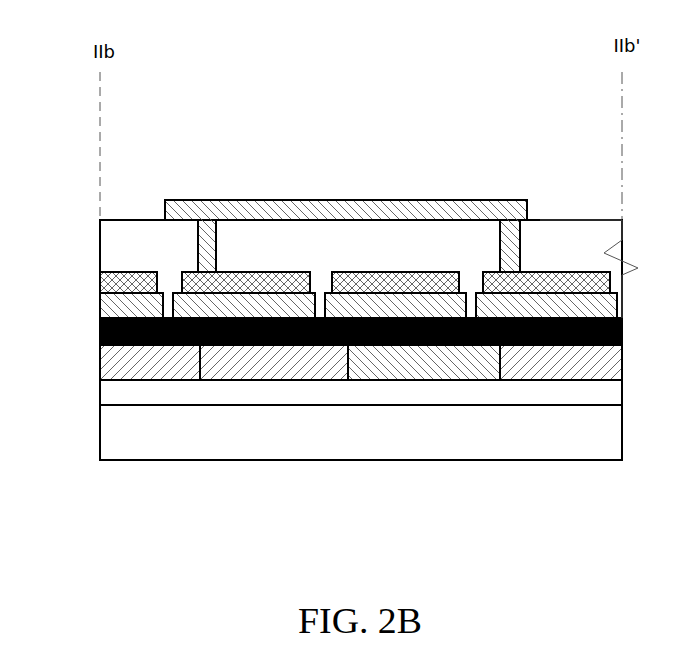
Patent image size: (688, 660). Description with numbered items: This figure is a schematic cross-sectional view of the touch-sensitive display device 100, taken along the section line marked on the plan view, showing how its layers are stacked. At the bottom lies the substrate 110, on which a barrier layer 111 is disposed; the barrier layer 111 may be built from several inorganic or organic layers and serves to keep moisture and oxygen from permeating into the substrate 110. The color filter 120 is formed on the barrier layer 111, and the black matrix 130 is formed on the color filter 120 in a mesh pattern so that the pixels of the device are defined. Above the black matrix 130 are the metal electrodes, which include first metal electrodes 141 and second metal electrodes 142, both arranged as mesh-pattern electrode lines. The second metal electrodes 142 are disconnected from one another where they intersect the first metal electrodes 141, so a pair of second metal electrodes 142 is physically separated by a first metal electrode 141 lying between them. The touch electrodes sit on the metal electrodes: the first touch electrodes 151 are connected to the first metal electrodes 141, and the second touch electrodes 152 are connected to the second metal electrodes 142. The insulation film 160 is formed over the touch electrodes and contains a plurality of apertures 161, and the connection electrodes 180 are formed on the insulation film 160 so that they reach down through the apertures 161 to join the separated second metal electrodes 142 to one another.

The touch-sensitive display device 100 is at (560, 39).
The substrate 110 is at (110, 430).
The barrier layer 111 is at (110, 397).
The color filter 120 is at (265, 362).
The black matrix 130 is at (100, 328).
The first metal electrodes 141 is at (437, 308).
The second metal electrodes 142 is at (263, 305).
The first touch electrodes 151 is at (378, 280).
The second touch electrodes 152 is at (573, 280).
The insulation film 160 is at (110, 244).
The apertures 161 is at (520, 239).
The connection electrodes 180 is at (335, 212).